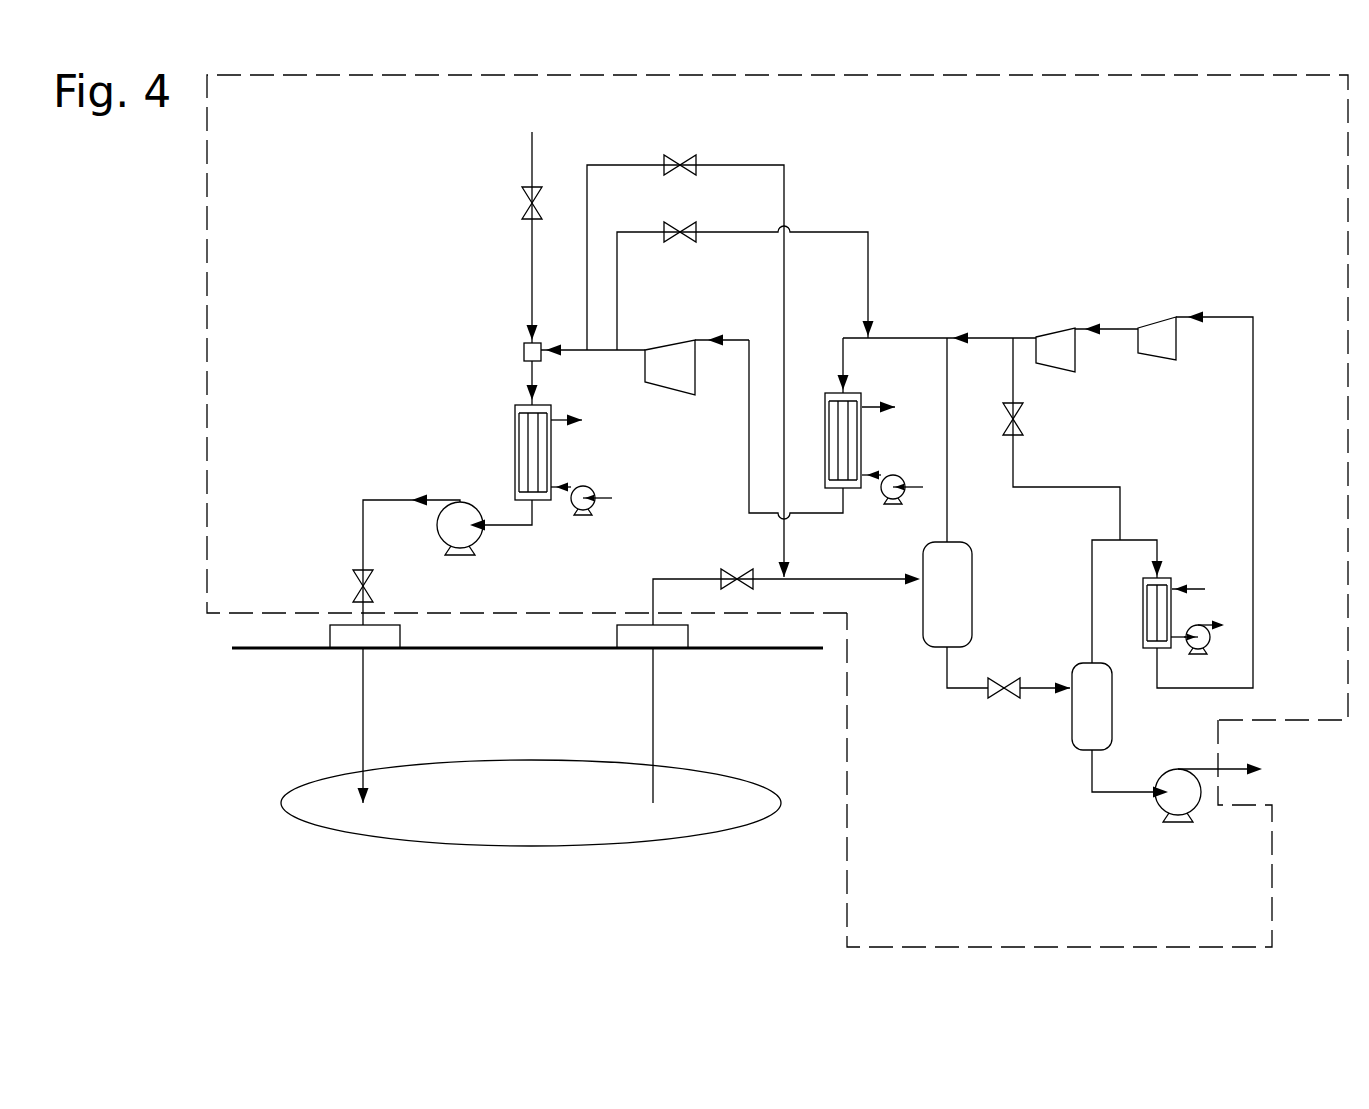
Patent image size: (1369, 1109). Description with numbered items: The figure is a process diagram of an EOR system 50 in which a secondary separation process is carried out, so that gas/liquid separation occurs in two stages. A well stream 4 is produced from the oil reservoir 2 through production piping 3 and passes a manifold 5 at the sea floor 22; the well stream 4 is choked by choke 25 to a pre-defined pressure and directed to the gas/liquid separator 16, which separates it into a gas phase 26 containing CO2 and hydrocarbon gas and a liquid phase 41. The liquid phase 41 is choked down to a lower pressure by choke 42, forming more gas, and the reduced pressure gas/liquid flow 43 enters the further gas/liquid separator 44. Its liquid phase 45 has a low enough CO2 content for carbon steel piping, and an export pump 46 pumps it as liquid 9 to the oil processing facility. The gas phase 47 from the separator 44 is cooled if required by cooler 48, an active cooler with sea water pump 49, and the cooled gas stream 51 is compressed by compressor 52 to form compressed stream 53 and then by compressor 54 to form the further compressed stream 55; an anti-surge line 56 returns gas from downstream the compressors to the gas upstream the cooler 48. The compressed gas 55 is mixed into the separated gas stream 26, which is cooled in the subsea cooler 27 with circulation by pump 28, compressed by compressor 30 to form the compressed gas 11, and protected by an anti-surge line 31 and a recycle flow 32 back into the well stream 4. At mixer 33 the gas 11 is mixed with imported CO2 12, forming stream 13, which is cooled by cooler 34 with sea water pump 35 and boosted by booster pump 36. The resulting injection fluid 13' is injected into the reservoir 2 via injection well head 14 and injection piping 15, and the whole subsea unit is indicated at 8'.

The oil reservoir 2 is at (475, 835).
The production piping 3 is at (655, 715).
The well stream 4 is at (652, 585).
The manifold 5 is at (632, 655).
The floating structure / regasification unit 8' is at (729, 397).
The liquid phase 9 is at (1232, 772).
The cooled, compressed gas 11 is at (572, 355).
The imported CO2 12 is at (530, 247).
The stream 13 is at (488, 377).
The injection fluid 13' is at (375, 560).
The injection well head 14 is at (380, 637).
The injection piping 15 is at (362, 730).
The gas/liquid separator 16 is at (960, 597).
The sea floor 22 is at (265, 652).
The choke 25 is at (722, 573).
The gas phase 26 is at (945, 382).
The subsea cooler 27 is at (852, 434).
The pump 28 is at (900, 500).
The compressor 30 is at (670, 358).
The anti-surge line 31 is at (840, 230).
The recycle flow 32 is at (728, 163).
The mixer 33 is at (523, 350).
The cooler 34 is at (520, 440).
The sea water pump 35 is at (590, 485).
The booster pump 36 is at (458, 540).
The liquid phase 41 is at (958, 690).
The choke 42 is at (1010, 700).
The reduced pressure gas/liquid flow 43 is at (1040, 685).
The further gas/liquid separator 44 is at (1100, 717).
The liquid phase 45 is at (1110, 795).
The export pump 46 is at (1182, 808).
The gas phase 47 is at (1090, 565).
The cooler 48 is at (1160, 577).
The sea water pump 49 is at (1215, 638).
The EOR system 50 is at (692, 943).
The cooled gas stream 51 is at (1250, 424).
The compressor 52 is at (1158, 333).
The compressed stream 53 is at (1107, 327).
The compressor 54 is at (1052, 347).
The further compressed stream 55 is at (993, 338).
The anti-surge line 56 is at (912, 337).